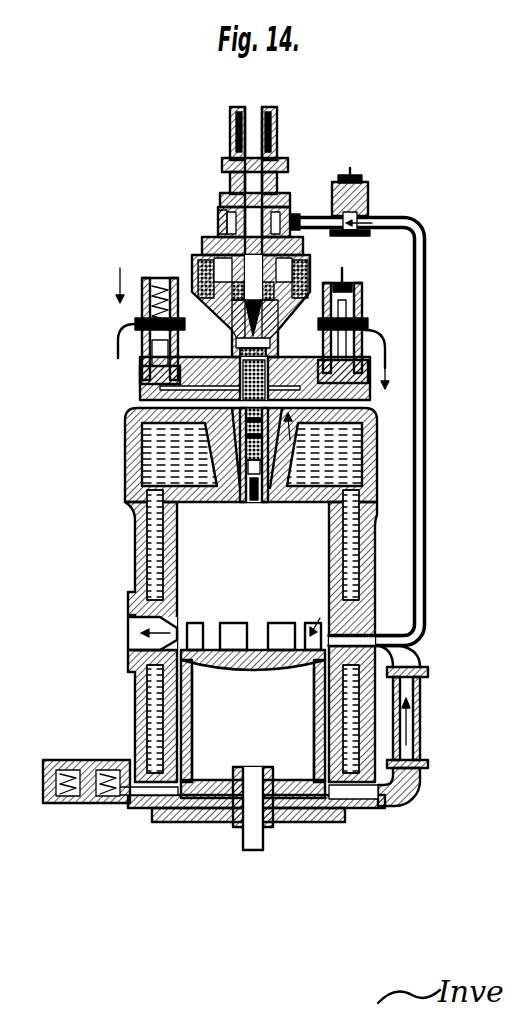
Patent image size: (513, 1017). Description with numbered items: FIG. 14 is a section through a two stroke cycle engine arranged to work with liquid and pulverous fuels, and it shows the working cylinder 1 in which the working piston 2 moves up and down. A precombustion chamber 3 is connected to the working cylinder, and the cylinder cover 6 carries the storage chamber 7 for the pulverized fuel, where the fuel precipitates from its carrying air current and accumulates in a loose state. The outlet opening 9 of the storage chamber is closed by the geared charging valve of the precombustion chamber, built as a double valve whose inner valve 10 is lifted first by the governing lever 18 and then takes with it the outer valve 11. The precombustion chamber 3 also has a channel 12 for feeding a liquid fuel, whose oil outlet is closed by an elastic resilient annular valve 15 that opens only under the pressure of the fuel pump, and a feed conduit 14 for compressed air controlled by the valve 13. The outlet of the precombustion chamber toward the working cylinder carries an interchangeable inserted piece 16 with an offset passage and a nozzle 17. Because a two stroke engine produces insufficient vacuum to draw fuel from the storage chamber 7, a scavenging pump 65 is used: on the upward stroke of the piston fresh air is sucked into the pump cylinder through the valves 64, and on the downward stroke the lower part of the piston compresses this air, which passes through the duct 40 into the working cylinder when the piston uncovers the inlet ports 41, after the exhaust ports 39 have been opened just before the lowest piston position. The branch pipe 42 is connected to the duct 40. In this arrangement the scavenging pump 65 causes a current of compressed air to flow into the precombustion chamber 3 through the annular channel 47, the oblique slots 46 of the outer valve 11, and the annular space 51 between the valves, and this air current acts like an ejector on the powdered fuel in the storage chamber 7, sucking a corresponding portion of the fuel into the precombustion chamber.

The working cylinder 1 is at (185, 563).
The working piston 2 is at (150, 713).
The precombustion chamber 3 is at (262, 447).
The cylinder cover 6 is at (377, 437).
The storage chamber 7 is at (287, 269).
The outlet opening 9 is at (268, 344).
The inner valve 10 is at (236, 340).
The outer valve 11 is at (237, 318).
The channel 12 is at (226, 413).
The valve 13 is at (365, 337).
The feed conduit 14 is at (368, 405).
The annular valve 15 is at (226, 424).
The inserted piece 16 is at (241, 500).
The nozzle 17 is at (262, 500).
The governing lever 18 is at (283, 152).
The exhaust ports 39 is at (137, 627).
The duct 40 is at (412, 728).
The inlet ports 41 is at (403, 642).
The branch pipe 42 is at (418, 558).
The slots 46 is at (281, 206).
The annular channel 47 is at (219, 223).
The annular space 51 is at (283, 308).
The valves 64 is at (102, 768).
The scavenging pump 65 is at (196, 806).